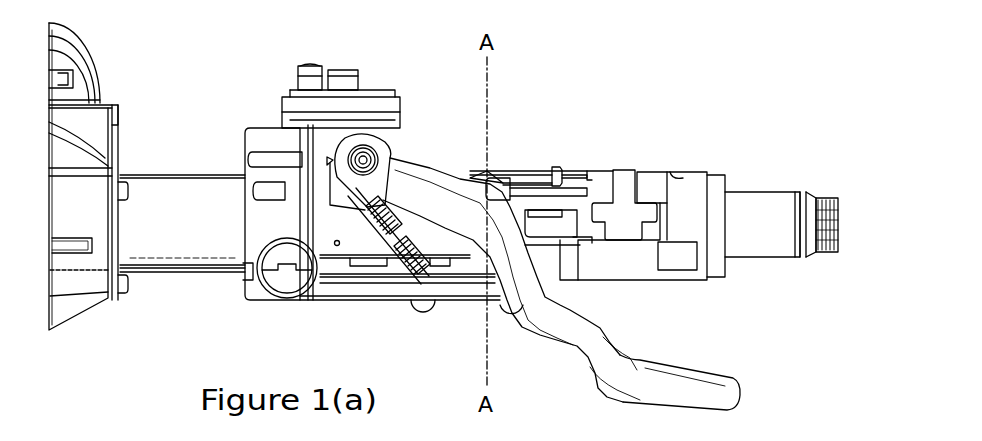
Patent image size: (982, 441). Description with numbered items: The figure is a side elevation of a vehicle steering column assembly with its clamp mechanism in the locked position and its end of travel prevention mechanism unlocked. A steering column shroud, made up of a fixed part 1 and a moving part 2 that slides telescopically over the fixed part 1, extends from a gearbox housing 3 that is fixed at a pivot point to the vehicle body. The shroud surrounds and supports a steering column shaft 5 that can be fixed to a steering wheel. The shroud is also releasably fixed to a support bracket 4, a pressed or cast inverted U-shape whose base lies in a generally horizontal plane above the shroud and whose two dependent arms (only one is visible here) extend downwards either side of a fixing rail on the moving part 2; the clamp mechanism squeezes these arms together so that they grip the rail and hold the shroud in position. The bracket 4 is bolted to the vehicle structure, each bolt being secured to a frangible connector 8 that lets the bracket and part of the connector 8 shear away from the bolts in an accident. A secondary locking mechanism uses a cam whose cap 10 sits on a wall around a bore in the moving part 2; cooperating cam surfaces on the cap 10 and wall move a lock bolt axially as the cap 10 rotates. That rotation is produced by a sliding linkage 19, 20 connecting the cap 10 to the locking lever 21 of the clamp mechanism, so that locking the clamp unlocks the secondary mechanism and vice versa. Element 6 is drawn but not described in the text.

The fixed part 1 is at (178, 175).
The moving part 2 is at (690, 178).
The gearbox housing 3 is at (85, 310).
The support bracket 4 is at (370, 130).
The steering column shaft 5 is at (760, 202).
The nut 6 is at (310, 65).
The frangible connector 8 is at (300, 90).
The cap 10 is at (500, 170).
The sliding linkage 19 is at (480, 165).
The sliding linkage 20 is at (577, 192).
The locking lever 21 is at (673, 370).